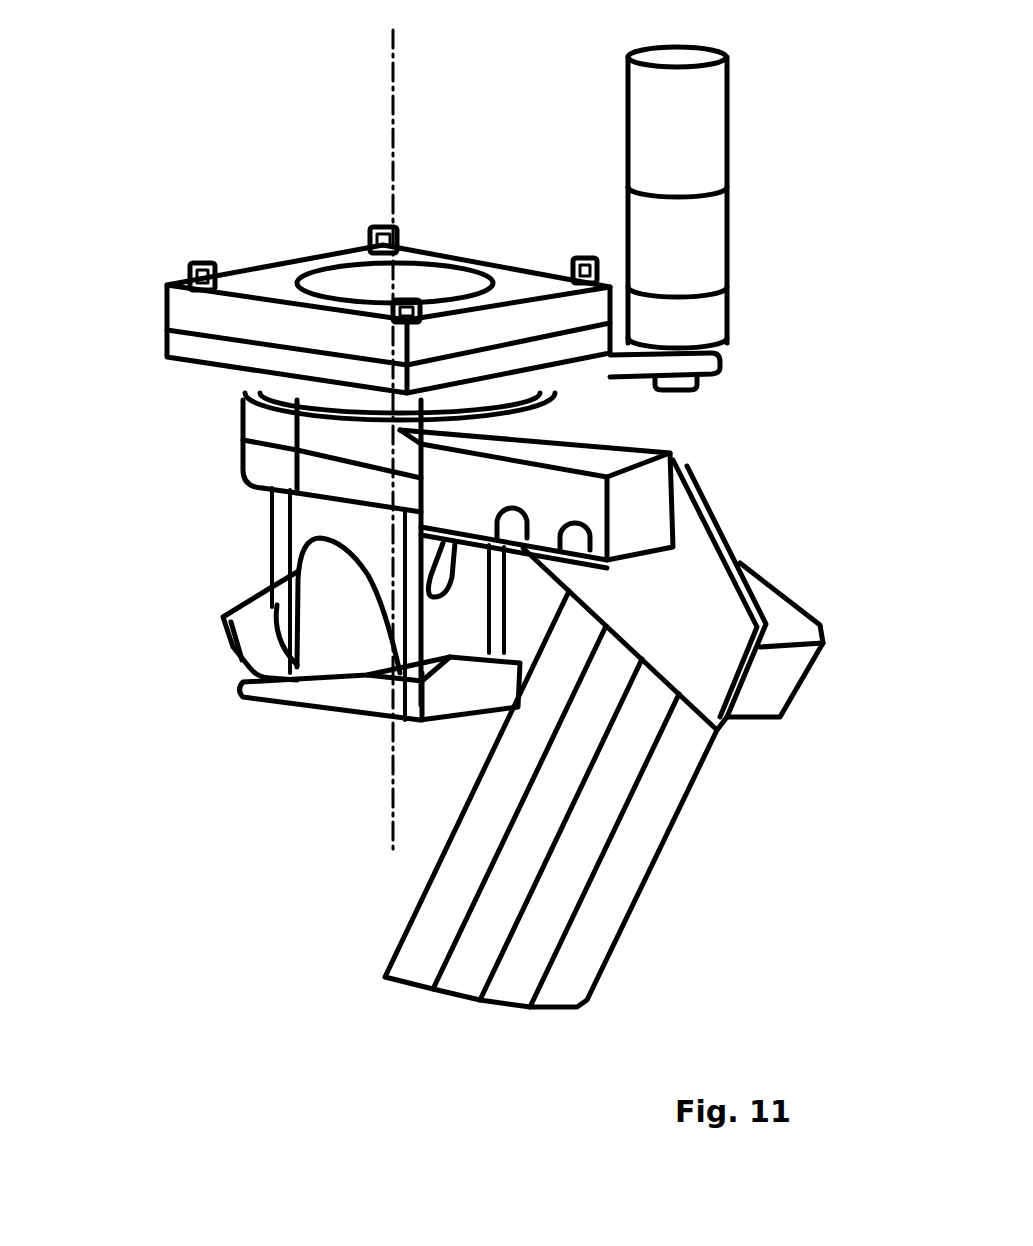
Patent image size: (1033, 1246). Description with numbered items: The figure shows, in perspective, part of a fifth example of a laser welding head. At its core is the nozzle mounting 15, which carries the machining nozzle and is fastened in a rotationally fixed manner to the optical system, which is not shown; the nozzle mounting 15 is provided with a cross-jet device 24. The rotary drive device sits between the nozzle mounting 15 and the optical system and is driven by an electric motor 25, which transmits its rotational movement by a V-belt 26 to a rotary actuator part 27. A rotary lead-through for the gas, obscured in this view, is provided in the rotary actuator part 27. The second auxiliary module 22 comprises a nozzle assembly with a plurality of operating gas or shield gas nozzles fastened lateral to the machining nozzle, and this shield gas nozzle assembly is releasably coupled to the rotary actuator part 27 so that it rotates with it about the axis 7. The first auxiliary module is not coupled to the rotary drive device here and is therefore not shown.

The rotation axis 7 is at (397, 140).
The nozzle mounting 15 is at (317, 523).
The second auxiliary module 22 is at (770, 789).
The cross-jet device 24 is at (263, 653).
The electric motor 25 is at (688, 238).
The V-belt 26 is at (607, 377).
The rotary actuator part 27 is at (253, 433).